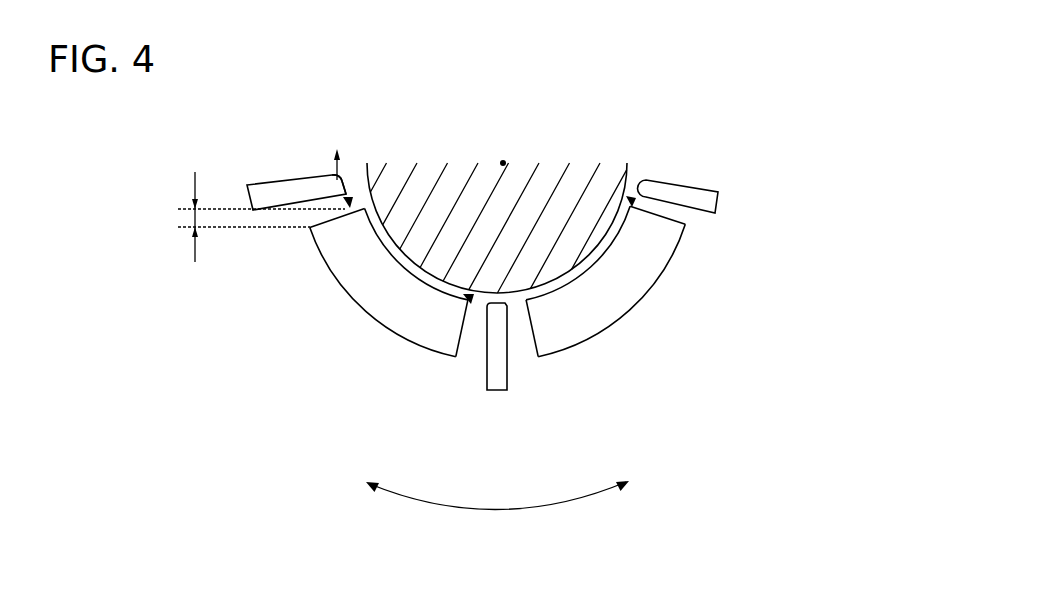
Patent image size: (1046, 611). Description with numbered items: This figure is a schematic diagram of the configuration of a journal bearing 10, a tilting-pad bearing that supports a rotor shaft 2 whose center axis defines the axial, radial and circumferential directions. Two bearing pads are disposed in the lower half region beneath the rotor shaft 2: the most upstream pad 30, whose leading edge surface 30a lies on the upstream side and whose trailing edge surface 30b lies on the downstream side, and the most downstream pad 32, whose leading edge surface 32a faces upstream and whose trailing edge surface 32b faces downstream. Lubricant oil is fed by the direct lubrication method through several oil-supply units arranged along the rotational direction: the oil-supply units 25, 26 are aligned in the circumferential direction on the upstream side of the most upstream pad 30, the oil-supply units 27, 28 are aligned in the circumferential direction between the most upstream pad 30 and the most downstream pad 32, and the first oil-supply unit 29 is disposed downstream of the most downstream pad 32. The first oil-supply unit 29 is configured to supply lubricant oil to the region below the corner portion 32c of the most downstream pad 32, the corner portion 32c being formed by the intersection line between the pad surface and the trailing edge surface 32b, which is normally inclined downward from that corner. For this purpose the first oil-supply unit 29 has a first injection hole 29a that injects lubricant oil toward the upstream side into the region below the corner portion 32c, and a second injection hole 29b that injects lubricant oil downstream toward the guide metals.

The journal bearing 10 is at (660, 98).
The rotor shaft 2 is at (563, 165).
The oil-supply unit 25 is at (672, 196).
The oil-supply unit 26 is at (682, 190).
The oil-supply unit 27 is at (485, 342).
The oil-supply unit 28 is at (498, 372).
The first oil-supply unit 29 is at (273, 187).
The first injection hole 29a is at (345, 182).
The second injection hole 29b is at (337, 178).
The most upstream pad 30 is at (643, 282).
The leading edge surface 30a is at (672, 217).
The trailing edge surface 30b is at (527, 347).
The most downstream pad 32 is at (372, 306).
The leading edge surface 32a is at (470, 345).
The trailing edge surface 32b is at (312, 222).
The corner portion 32c is at (370, 200).